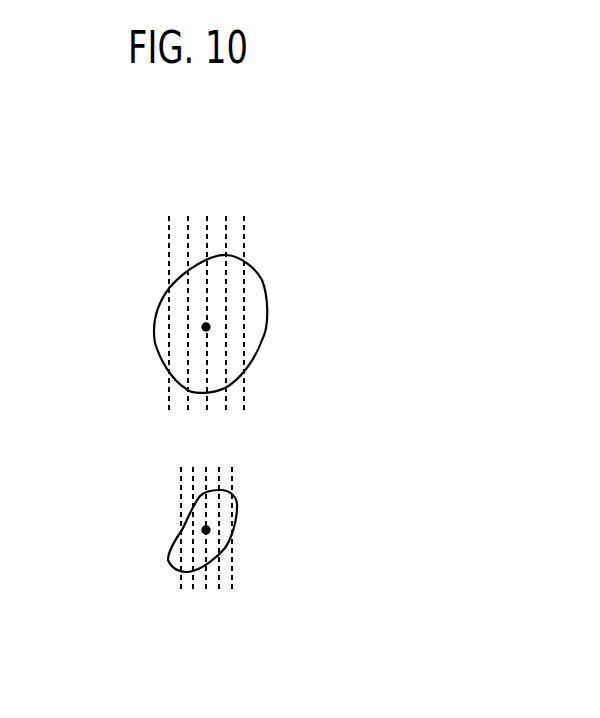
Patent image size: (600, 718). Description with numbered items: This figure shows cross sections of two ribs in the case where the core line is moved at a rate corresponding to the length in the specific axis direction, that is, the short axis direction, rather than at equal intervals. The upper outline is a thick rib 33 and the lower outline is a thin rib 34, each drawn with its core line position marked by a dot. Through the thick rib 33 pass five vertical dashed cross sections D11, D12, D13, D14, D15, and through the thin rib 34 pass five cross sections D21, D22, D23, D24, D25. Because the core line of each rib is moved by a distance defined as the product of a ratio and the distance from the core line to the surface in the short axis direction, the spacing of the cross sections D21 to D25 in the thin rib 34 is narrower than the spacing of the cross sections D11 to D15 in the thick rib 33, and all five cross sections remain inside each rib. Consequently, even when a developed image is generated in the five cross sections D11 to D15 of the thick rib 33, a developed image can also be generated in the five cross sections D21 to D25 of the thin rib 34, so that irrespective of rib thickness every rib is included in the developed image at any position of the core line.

The cross section D11 is at (169, 228).
The cross section D12 is at (188, 218).
The cross section D13 is at (207, 216).
The cross section D14 is at (226, 218).
The cross section D15 is at (244, 228).
The thick rib 33 is at (262, 277).
The cross section D21 is at (178, 477).
The cross section D22 is at (192, 470).
The cross section D23 is at (206, 467).
The cross section D24 is at (220, 470).
The cross section D25 is at (235, 477).
The thin rib 34 is at (238, 510).